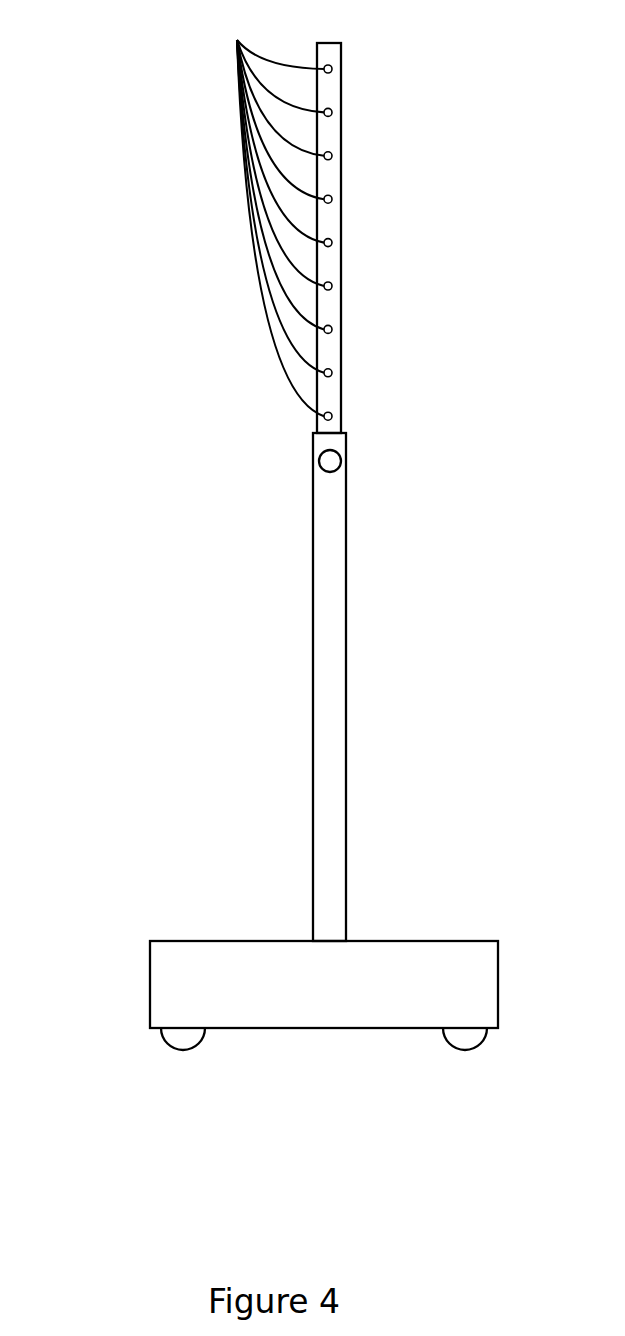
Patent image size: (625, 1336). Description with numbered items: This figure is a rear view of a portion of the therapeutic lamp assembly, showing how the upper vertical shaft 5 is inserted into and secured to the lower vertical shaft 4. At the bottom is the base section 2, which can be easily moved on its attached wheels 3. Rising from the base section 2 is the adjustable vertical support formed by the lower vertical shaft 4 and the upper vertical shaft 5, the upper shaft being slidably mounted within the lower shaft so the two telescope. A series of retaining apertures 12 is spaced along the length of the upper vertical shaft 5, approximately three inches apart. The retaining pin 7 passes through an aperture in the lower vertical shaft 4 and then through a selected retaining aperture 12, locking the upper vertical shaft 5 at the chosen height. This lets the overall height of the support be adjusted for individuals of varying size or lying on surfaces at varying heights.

The base section 2 is at (227, 941).
The wheels 3 is at (467, 1050).
The lower vertical support shaft 4 is at (346, 758).
The upper vertical support shaft 5 is at (342, 303).
The retaining pin 7 is at (319, 461).
The retaining apertures 12 is at (270, 209).